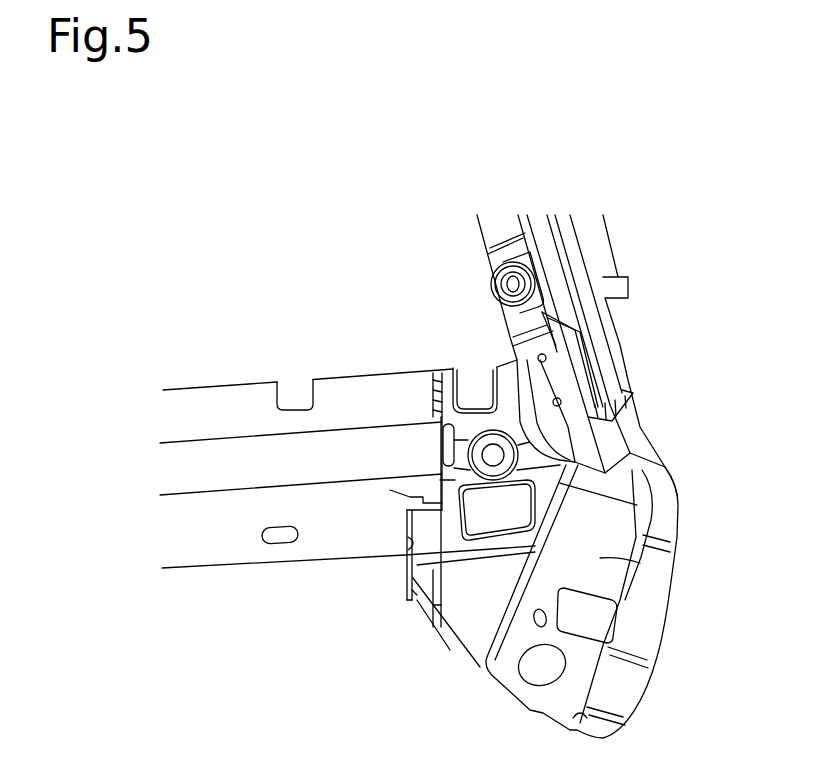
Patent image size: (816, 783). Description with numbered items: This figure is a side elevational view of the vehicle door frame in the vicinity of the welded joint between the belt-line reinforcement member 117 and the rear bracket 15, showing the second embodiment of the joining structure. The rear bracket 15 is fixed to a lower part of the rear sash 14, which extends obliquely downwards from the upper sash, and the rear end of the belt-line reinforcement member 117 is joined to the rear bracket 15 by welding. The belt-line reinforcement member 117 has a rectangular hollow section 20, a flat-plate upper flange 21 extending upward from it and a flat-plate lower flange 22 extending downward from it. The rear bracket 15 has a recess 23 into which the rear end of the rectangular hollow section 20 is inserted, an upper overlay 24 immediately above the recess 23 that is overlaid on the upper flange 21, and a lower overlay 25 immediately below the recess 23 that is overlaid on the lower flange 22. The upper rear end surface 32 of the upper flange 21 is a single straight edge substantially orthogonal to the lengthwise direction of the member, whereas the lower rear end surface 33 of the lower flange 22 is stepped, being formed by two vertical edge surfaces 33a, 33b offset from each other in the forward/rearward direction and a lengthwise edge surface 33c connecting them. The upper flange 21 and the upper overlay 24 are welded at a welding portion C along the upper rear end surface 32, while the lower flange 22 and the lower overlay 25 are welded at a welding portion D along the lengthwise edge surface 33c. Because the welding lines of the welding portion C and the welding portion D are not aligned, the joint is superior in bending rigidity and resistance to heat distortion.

The rear sash 14 is at (628, 277).
The rear bracket 15 is at (600, 558).
The rectangular hollow section 20 is at (200, 463).
The upper flange 21 is at (280, 382).
The lower flange 22 is at (248, 531).
The recess 23 is at (437, 433).
The upper overlay 24 is at (453, 398).
The lower overlay 25 is at (547, 472).
The upper rear end surface 32 is at (447, 385).
The lower rear end surface 33 is at (433, 705).
The vertical edge surface 33a is at (433, 610).
The vertical edge surface 33b is at (413, 567).
The lengthwise edge surface 33c is at (413, 603).
The belt-line reinforcement member 117 is at (172, 568).
The welding portion C is at (430, 407).
The welding portion D is at (390, 490).